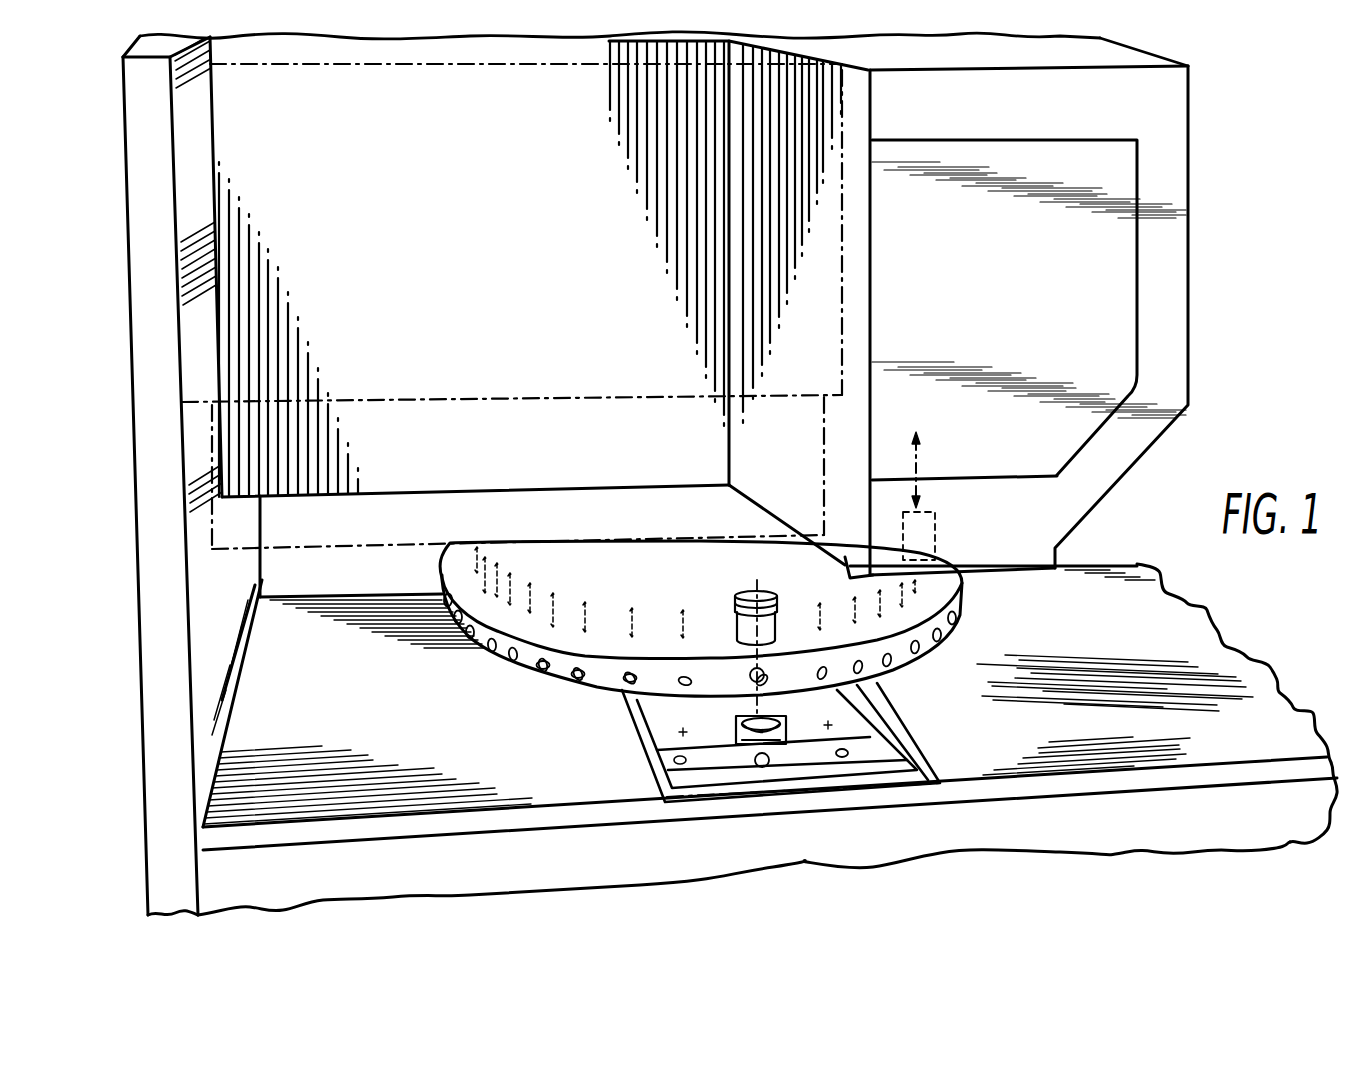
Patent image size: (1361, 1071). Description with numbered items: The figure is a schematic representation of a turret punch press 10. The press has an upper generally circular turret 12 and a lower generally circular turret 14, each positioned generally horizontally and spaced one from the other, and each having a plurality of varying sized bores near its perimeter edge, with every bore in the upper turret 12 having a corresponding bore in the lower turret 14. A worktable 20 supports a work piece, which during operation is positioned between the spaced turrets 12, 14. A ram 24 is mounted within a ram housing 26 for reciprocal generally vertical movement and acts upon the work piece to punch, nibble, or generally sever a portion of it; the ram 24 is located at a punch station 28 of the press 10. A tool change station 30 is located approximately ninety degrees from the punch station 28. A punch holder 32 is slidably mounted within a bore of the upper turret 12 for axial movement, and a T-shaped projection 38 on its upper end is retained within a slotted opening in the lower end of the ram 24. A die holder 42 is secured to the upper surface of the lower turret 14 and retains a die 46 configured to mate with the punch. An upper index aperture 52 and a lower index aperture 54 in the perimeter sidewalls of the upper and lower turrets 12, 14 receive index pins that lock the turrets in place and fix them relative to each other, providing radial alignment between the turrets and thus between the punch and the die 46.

The turret punch press 10 is at (1216, 386).
The upper turret 12 is at (520, 676).
The lower turret 14 is at (655, 742).
The worktable 20 is at (1008, 733).
The ram 24 is at (938, 510).
The ram housing 26 is at (845, 135).
The punch station 28 is at (947, 548).
The tool change station 30 is at (773, 580).
The punch holder 32 is at (736, 622).
The T-shaped projection 38 is at (740, 595).
The die holder 42 is at (735, 745).
The die 46 is at (752, 713).
The upper index aperture 52 is at (628, 680).
The lower index aperture 54 is at (840, 758).